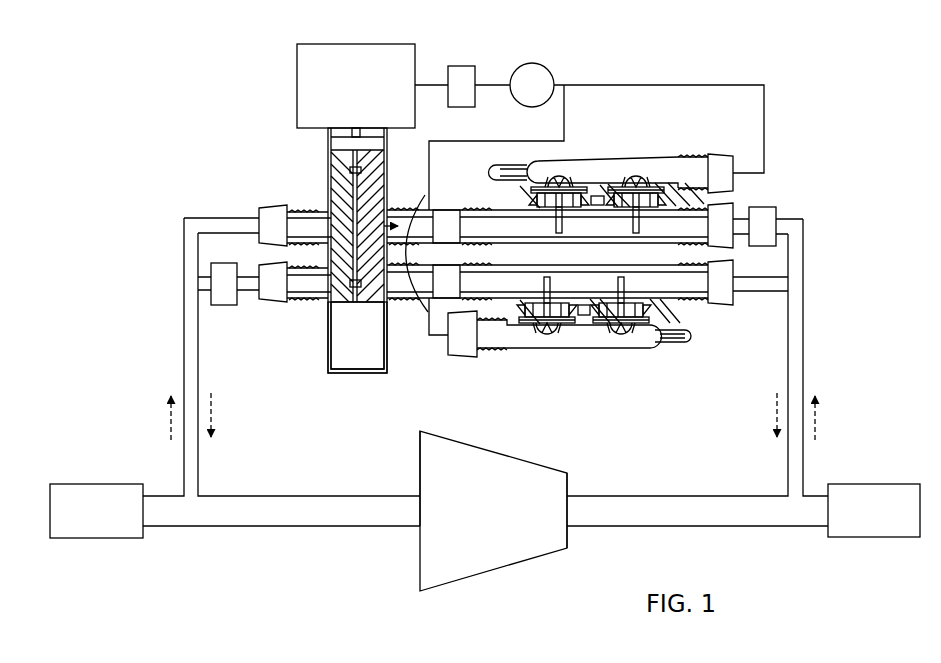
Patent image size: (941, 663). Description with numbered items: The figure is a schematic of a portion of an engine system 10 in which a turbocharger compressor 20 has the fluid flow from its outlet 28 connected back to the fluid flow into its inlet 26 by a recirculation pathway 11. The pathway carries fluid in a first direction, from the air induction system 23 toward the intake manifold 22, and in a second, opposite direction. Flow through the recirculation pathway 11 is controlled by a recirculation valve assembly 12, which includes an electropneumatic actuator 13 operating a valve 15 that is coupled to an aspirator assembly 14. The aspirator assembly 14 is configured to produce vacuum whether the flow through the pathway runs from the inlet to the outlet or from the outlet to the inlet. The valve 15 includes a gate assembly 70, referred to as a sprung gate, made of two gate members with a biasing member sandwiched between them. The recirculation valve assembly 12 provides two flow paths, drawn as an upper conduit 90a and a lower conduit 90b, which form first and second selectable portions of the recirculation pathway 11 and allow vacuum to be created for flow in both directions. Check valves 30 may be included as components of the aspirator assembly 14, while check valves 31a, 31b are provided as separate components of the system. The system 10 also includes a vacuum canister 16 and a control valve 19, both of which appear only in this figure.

The engine system 10 is at (834, 79).
The recirculation pathway 11 is at (184, 345).
The recirculation valve assembly 12 is at (272, 70).
The electropneumatic actuator 13 is at (357, 44).
The aspirator assembly 14 is at (630, 153).
The valve 15 is at (312, 167).
The vacuum canister 16 is at (534, 63).
The control valve 19 is at (460, 66).
The turbocharger compressor 20 is at (497, 571).
The intake manifold 22 is at (886, 484).
The air induction system 23 is at (100, 484).
The inlet 26 is at (419, 528).
The outlet 28 is at (568, 528).
The check valves 30 is at (537, 339).
The check valve 31a is at (778, 209).
The check valve 31b is at (216, 305).
The gate assembly 70 is at (322, 341).
The upper conduit 90a is at (213, 218).
The lower conduit 90b is at (248, 292).